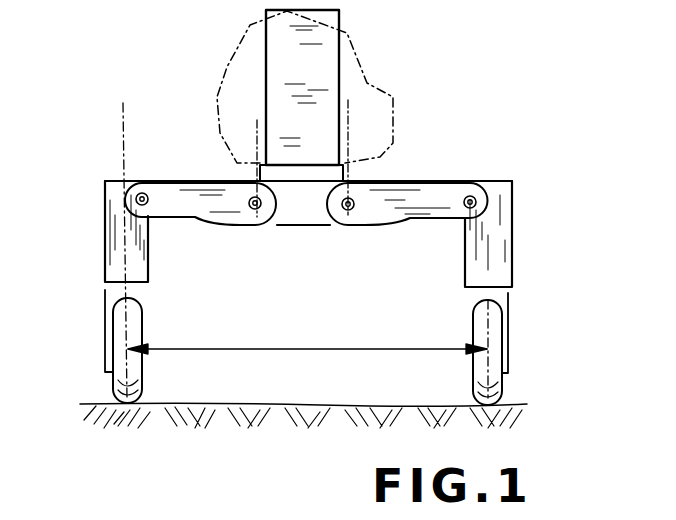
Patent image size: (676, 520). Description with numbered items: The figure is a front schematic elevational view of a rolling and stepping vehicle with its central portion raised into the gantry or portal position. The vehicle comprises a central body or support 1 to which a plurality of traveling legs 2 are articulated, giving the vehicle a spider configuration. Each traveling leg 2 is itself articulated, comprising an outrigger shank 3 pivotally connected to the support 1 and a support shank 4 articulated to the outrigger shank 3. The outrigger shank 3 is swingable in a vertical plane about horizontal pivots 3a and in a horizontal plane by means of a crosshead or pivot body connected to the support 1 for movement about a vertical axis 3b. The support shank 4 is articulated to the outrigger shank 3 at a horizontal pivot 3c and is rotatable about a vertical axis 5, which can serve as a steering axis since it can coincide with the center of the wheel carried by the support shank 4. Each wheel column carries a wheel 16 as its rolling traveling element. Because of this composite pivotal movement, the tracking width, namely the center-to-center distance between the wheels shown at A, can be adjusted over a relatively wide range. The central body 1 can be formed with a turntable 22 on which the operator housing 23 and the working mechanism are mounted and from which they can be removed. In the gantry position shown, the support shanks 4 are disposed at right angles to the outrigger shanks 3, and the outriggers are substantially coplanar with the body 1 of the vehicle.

The support 1 is at (302, 207).
The traveling legs 2 is at (173, 222).
The outrigger shank 3 is at (187, 182).
The pivots 3a is at (255, 209).
The vertical axis 3b is at (256, 135).
The horizontal pivot 3c is at (136, 199).
The support shank 4 is at (103, 240).
The vertical axis 5 is at (122, 123).
The wheel 16 is at (113, 388).
The turntable 22 is at (352, 178).
The operator housing 23 is at (267, 72).
The tracking width A is at (333, 349).